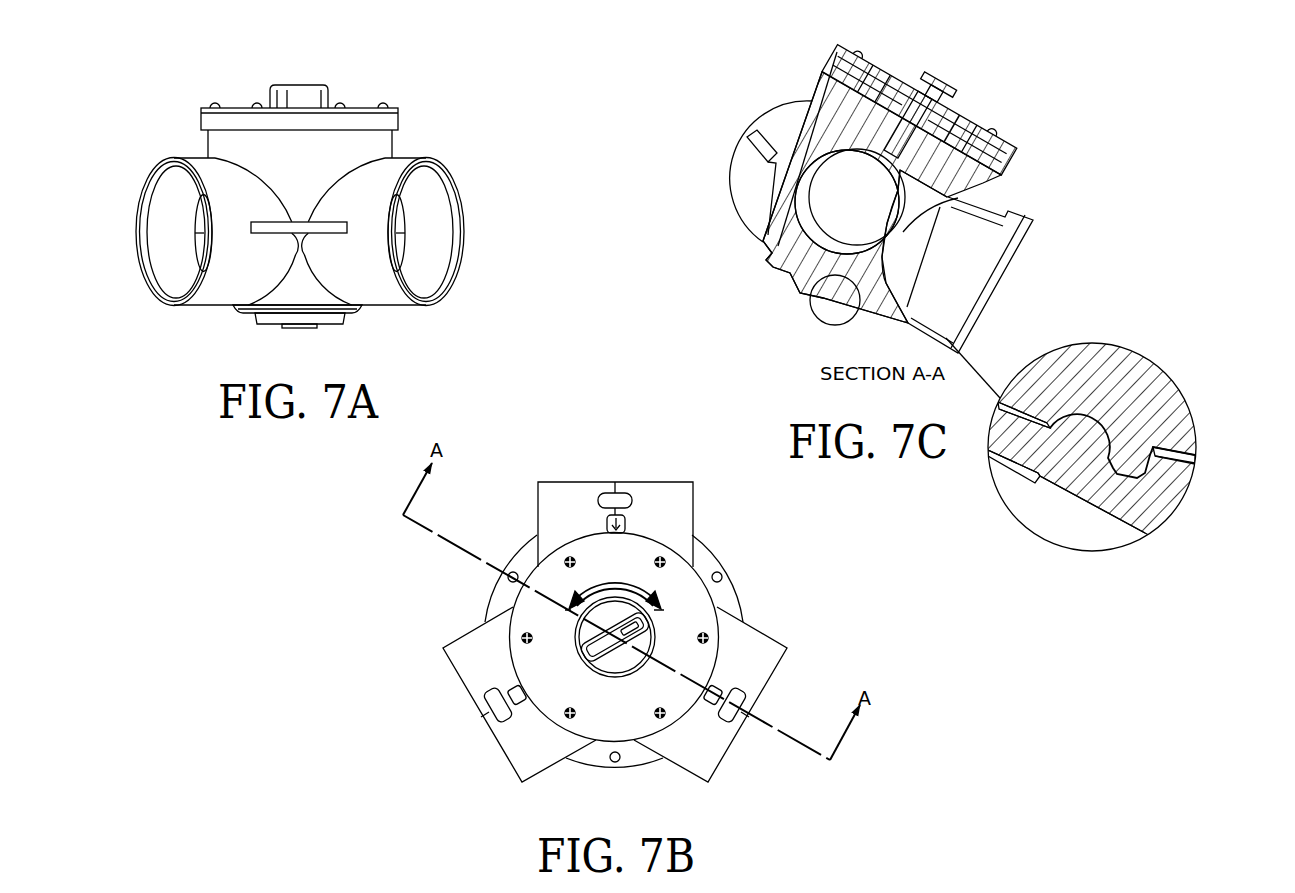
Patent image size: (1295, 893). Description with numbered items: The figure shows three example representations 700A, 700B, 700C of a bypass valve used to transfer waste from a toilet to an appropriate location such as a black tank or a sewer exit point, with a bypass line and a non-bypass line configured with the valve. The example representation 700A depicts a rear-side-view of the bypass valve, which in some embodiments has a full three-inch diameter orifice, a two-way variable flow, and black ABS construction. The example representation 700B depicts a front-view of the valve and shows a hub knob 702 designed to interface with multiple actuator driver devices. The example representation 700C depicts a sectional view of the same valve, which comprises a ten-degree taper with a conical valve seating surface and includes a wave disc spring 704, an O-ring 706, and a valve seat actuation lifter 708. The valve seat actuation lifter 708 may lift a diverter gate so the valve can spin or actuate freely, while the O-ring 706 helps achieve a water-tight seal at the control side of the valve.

In FIG. 7A, the example representation 700A is at (175, 75).
In FIG. 7B, the example representation 700B is at (576, 436).
In FIG. 7C, the example representation 700C is at (741, 70).
In FIG. 7B, the hub knob 702 is at (612, 612).
In FIG. 7C, the wave disc spring 704 is at (894, 94).
In FIG. 7C, the O-ring 706 is at (823, 102).
In FIG. 7C, the valve seat actuation lifter 708 is at (1104, 398).